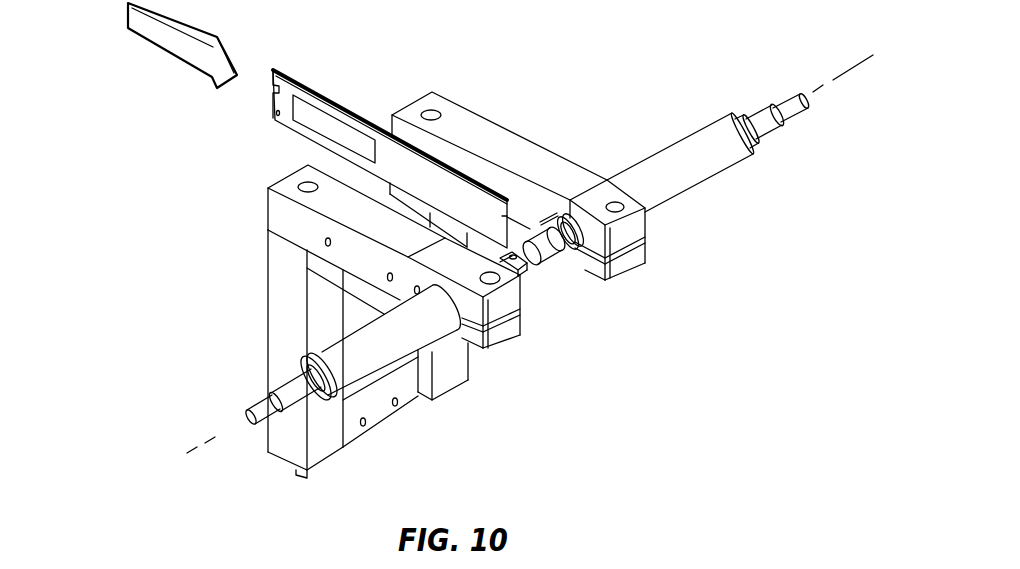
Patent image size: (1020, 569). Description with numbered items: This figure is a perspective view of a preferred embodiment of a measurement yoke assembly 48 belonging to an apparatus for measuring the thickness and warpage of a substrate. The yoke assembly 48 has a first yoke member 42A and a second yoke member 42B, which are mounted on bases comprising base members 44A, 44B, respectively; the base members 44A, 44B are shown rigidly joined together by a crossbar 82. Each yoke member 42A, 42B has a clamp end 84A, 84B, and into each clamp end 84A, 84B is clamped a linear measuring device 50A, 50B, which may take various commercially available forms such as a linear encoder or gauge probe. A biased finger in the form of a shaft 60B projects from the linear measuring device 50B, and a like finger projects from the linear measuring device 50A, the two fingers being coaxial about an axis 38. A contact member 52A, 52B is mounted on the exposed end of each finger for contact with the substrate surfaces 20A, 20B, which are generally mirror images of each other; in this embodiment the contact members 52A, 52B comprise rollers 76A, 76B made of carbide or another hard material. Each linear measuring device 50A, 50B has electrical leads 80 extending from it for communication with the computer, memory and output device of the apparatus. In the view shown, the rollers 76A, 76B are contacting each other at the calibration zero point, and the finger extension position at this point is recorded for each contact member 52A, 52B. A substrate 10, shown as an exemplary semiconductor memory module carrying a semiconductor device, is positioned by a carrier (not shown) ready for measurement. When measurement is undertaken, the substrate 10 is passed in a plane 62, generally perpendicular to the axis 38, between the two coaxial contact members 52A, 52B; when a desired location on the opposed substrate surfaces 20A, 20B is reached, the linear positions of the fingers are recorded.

The substrate 10 is at (360, 120).
The substrate surface 20A is at (272, 106).
The substrate surface 20B is at (318, 92).
The axis 38 is at (213, 438).
The first yoke member 42A is at (283, 208).
The second yoke member 42B is at (462, 128).
The base member 44A is at (287, 292).
The base member 44B is at (445, 370).
The measurement yoke assembly 48 is at (135, 215).
The linear measuring device 50A is at (337, 360).
The linear measuring device 50B is at (697, 140).
The contact member 52A is at (505, 260).
The contact member 52B is at (543, 220).
The shaft 60B is at (570, 237).
The plane 62 is at (165, 40).
The roller 76A is at (523, 267).
The roller 76B is at (550, 257).
The electrical leads 80 is at (793, 103).
The crossbar 82 is at (377, 400).
The clamp end 84A is at (503, 300).
The clamp end 84B is at (632, 232).